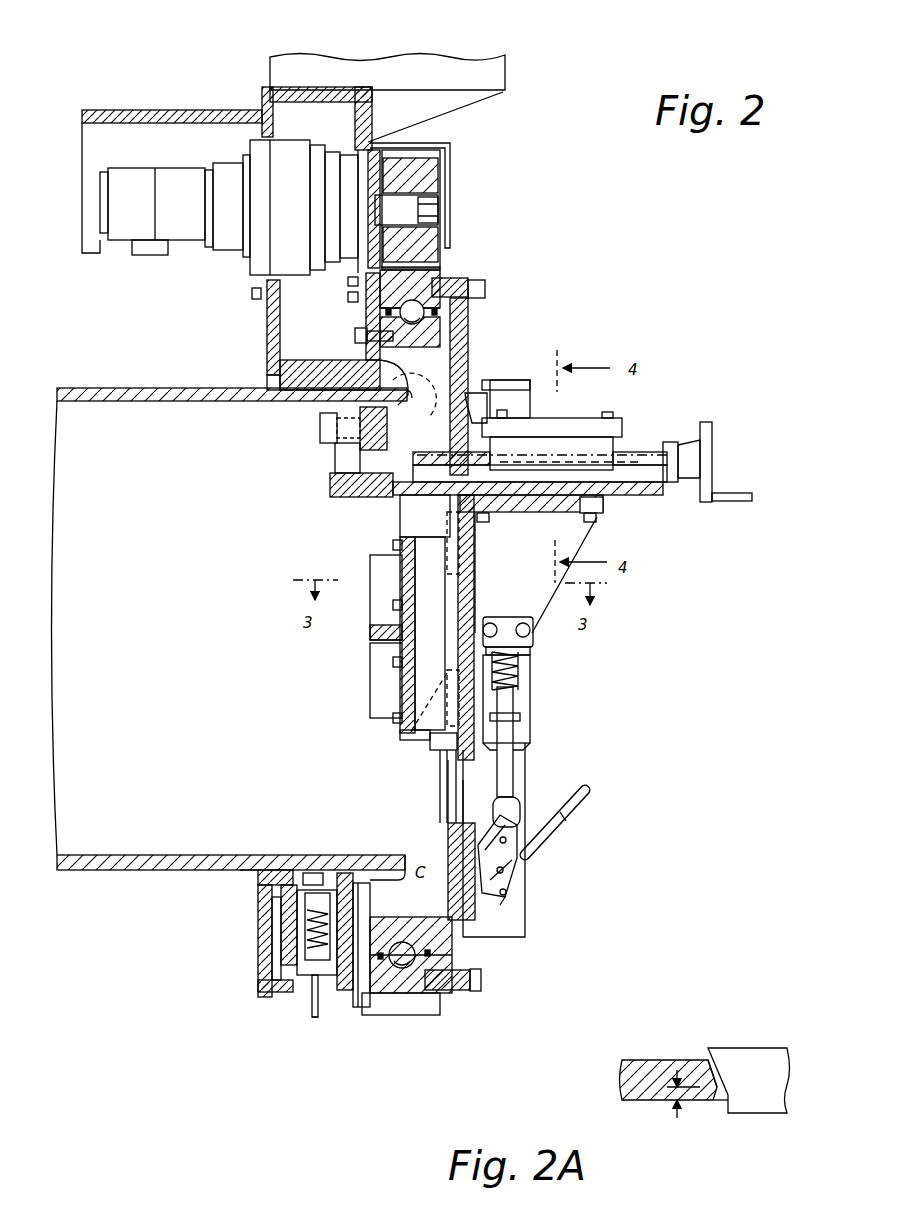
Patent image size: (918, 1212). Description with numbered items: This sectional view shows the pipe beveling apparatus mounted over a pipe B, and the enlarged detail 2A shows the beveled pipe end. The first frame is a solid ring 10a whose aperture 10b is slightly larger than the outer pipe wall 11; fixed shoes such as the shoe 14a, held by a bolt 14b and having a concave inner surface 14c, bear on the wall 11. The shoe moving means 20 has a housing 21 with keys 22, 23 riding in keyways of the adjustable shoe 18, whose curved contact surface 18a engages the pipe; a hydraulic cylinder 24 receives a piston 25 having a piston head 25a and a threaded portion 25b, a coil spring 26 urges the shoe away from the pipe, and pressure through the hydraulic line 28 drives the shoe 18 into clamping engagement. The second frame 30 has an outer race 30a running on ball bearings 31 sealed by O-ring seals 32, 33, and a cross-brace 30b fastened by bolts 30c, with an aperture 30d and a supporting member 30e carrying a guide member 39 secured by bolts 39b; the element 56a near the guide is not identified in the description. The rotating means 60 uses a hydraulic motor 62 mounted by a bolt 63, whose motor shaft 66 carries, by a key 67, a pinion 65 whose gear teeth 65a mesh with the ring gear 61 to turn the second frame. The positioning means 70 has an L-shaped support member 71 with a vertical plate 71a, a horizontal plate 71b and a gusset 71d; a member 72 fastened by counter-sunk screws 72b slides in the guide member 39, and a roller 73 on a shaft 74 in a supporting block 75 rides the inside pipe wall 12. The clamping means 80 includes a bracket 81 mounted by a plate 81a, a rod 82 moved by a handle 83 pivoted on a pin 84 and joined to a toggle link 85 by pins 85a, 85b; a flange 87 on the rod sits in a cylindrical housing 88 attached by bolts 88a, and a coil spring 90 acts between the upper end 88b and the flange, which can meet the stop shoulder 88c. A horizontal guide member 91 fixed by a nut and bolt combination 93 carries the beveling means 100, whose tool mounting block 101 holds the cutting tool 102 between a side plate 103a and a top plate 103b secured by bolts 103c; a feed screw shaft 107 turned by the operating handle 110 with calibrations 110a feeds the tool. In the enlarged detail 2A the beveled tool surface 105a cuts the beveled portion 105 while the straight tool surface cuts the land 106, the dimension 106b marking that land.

In FIG. 2, the pipe B is at (88, 385).
In FIG. 2, the detail view 2A is at (432, 395).
In FIG. 2, the solid ring 10a is at (440, 950).
In FIG. 2, the aperture 10b is at (475, 345).
In FIG. 2, the outer pipe wall 11 is at (152, 388).
In FIG. 2, the inside pipe wall 12 is at (100, 855).
In FIG. 2, the fixed shoe 14a is at (267, 365).
In FIG. 2, the bolt 14b is at (355, 334).
In FIG. 2, the concave inner surface 14c is at (300, 400).
In FIG. 2, the adjustable shoe 18 is at (255, 868).
In FIG. 2, the keyway 18a is at (272, 868).
In FIG. 2, the shoe moving means 20 is at (305, 928).
In FIG. 2, the housing 21 is at (258, 975).
In FIG. 2, the key 22 is at (272, 955).
In FIG. 2, the key 23 is at (362, 985).
In FIG. 2, the hydraulic cylinder 24 is at (318, 1000).
In FIG. 2, the piston 25 is at (305, 925).
In FIG. 2, the piston head 25a is at (290, 935).
In FIG. 2, the threaded portion 25b is at (313, 872).
In FIG. 2, the coil spring 26 is at (308, 918).
In FIG. 2, the hydraulic line 28 is at (314, 1012).
In FIG. 2, the second frame 30 is at (526, 850).
In FIG. 2, the annular outer race 30a is at (450, 280).
In FIG. 2, the cross-brace 30b is at (475, 912).
In FIG. 2, the bolts 30c is at (486, 288).
In FIG. 2, the aperture 30d is at (410, 740).
In FIG. 2, the supporting member 30e is at (393, 670).
In FIG. 2, the ball bearings 31 is at (430, 310).
In FIG. 2, the O-ring seal 32 is at (427, 948).
In FIG. 2, the O-ring seal 33 is at (381, 950).
In FIG. 2, the guide member 39 is at (380, 570).
In FIG. 2, the bolts 39b is at (393, 718).
In FIG. 2, the bolt 56a is at (393, 540).
In FIG. 2, the rotating means 60 is at (148, 135).
In FIG. 2, the ring gear 61 is at (445, 262).
In FIG. 2, the hydraulic motor 62 is at (225, 168).
In FIG. 2, the bolt 63 is at (252, 294).
In FIG. 2, the pinion 65 is at (432, 168).
In FIG. 2, the gear teeth 65a is at (440, 150).
In FIG. 2, the hydraulic motor shaft 66 is at (440, 200).
In FIG. 2, the key 67 is at (440, 212).
In FIG. 2, the positioning means 70 is at (305, 503).
In FIG. 2, the support member 71 is at (575, 585).
In FIG. 2, the vertically extending plate 71a is at (475, 582).
In FIG. 2, the horizontally extending plate 71b is at (603, 513).
In FIG. 2, the gusset 71d is at (575, 548).
In FIG. 2, the member 72 is at (445, 597).
In FIG. 2, the counter-sunk mounting screws 72b is at (462, 545).
In FIG. 2, the roller 73 is at (332, 480).
In FIG. 2, the shaft 74 is at (320, 428).
In FIG. 2, the supporting block 75 is at (335, 455).
In FIG. 2, the clamping means 80 is at (565, 722).
In FIG. 2, the supporting bracket 81 is at (520, 805).
In FIG. 2, the plate 81a is at (456, 835).
In FIG. 2, the rod 82 is at (513, 770).
In FIG. 2, the handle 83 is at (590, 788).
In FIG. 2, the pin 84 is at (508, 895).
In FIG. 2, the toggle link 85 is at (517, 843).
In FIG. 2, the pin 85a is at (520, 865).
In FIG. 2, the pin 85b is at (440, 815).
In FIG. 2, the flange 87 is at (520, 716).
In FIG. 2, the cylindrical housing 88 is at (530, 690).
In FIG. 2, the bolts 88a is at (540, 632).
In FIG. 2, the upper end 88b is at (533, 652).
In FIG. 2, the lower stop shoulder 88c is at (530, 752).
In FIG. 2, the coil spring 90 is at (520, 670).
In FIG. 2, the horizontal guide member 91 is at (660, 482).
In FIG. 2, the nut and bolt combination 93 is at (489, 518).
In FIG. 2, the beveling means 100 is at (628, 412).
In FIG. 2, the tool mounting block 101 is at (630, 420).
In FIG. 2, the cutting tool 102 is at (520, 380).
In FIG. 2A, the cutting tool 102 is at (765, 1048).
In FIG. 2, the side plate 103a is at (530, 404).
In FIG. 2, the top plate 103b is at (530, 380).
In FIG. 2, the bolts 103c is at (490, 400).
In FIG. 2A, the beveled portion 105 is at (712, 1060).
In FIG. 2A, the beveled surface 105a is at (706, 1060).
In FIG. 2A, the land 106 is at (730, 1105).
In FIG. 2A, the notch depth 106b is at (672, 1100).
In FIG. 2, the feed screw shaft 107 is at (640, 452).
In FIG. 2, the operating handle 110 is at (712, 465).
In FIG. 2, the calibrations 110a is at (700, 448).